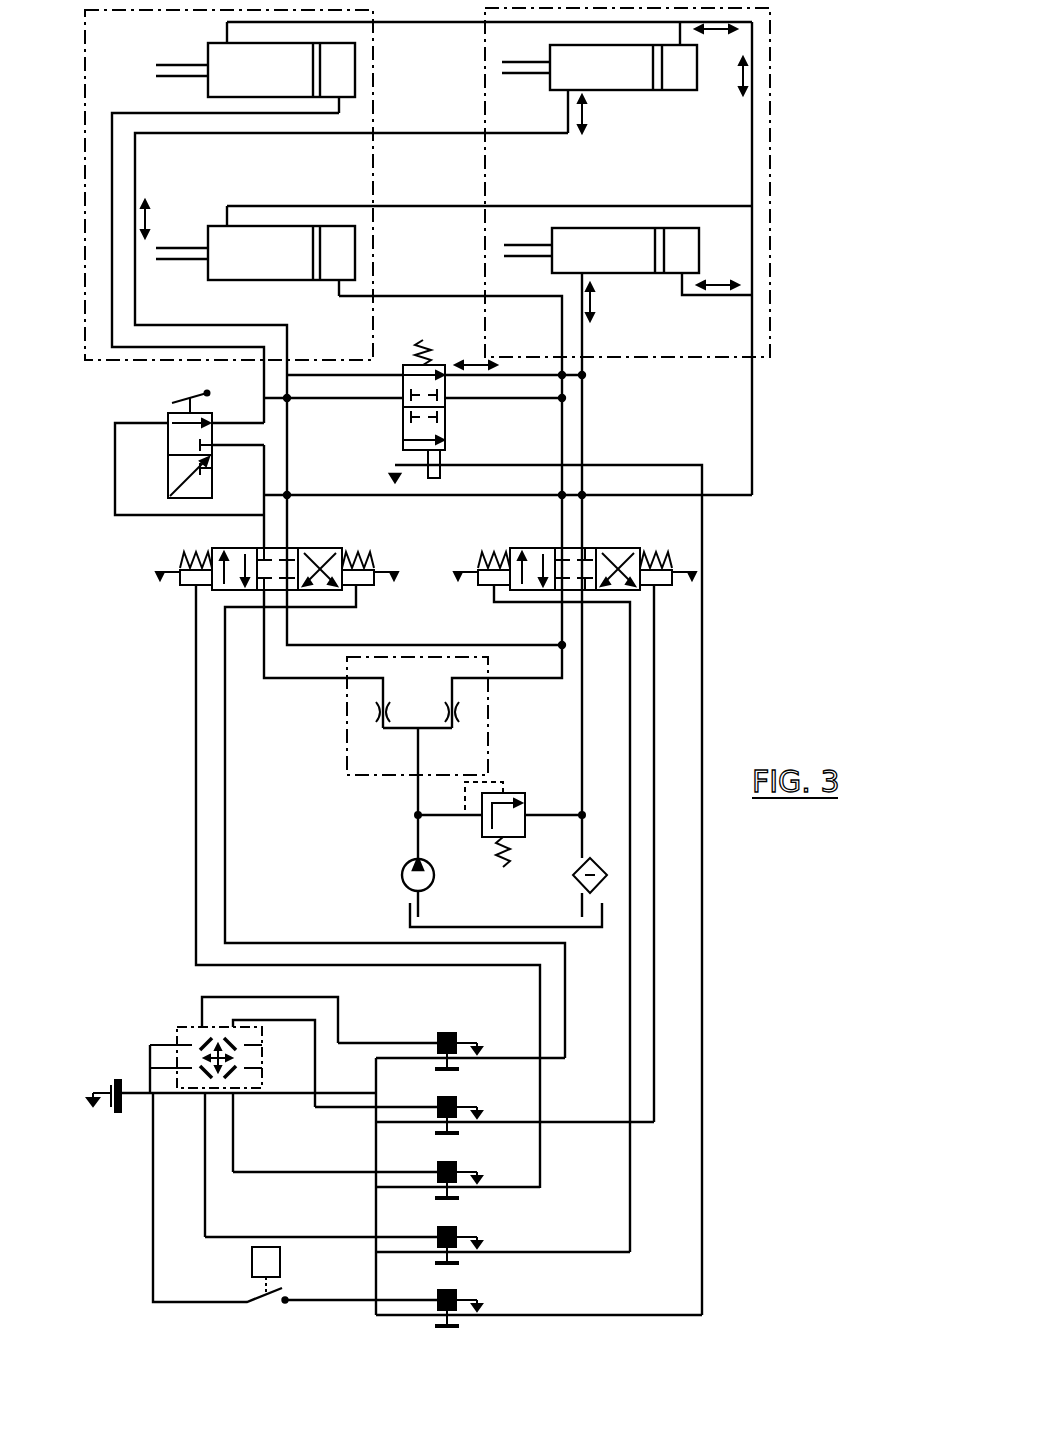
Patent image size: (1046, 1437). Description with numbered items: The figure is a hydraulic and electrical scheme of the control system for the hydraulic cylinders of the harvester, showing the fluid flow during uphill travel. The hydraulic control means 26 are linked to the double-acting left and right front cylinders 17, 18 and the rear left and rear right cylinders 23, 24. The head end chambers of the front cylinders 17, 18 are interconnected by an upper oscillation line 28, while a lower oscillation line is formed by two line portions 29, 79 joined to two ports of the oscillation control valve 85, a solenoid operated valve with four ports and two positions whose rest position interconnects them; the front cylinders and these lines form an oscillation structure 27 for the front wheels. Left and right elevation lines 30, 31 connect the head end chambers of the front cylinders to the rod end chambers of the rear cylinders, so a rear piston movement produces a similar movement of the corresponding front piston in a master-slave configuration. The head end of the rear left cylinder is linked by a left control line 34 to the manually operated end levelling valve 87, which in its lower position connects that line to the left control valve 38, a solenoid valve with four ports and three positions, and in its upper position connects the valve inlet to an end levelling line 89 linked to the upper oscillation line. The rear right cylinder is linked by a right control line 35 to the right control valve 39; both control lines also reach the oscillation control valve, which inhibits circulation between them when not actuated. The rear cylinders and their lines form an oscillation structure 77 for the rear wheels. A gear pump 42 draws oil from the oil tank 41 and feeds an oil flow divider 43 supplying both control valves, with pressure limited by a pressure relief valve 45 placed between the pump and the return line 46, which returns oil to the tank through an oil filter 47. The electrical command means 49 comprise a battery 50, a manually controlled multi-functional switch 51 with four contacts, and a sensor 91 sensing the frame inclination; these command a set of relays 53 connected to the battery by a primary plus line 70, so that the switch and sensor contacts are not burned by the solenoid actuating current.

The left front cylinder 17 is at (632, 92).
The right front cylinder 18 is at (622, 273).
The rear left cylinder 23 is at (357, 93).
The rear right cylinder 24 is at (357, 248).
The hydraulic control means 26 is at (724, 583).
The oscillation structure 27 is at (768, 163).
The upper oscillation line 28 is at (753, 76).
The lower oscillation line portion 29 is at (512, 137).
The left elevation line 30 is at (453, 28).
The right elevation line 31 is at (455, 208).
The left control line 34 is at (113, 280).
The right control line 35 is at (502, 300).
The left control valve 38 is at (233, 548).
The right control valve 39 is at (620, 546).
The oil tank 41 is at (408, 915).
The gear pump 42 is at (402, 875).
The oil flow divider 43 is at (347, 748).
The pressure relief valve 45 is at (482, 822).
The return line 46 is at (586, 735).
The oil filter 47 is at (572, 880).
The electrical command means 49 is at (722, 1070).
The battery 50 is at (113, 1115).
The multi-functional switch 51 is at (185, 1025).
The relays 53 is at (445, 1032).
The primary plus line 70 is at (167, 1093).
The oscillation structure 77 is at (85, 190).
The lower oscillation line portion 79 is at (582, 344).
The oscillation control valve 85 is at (445, 430).
The end levelling valve 87 is at (168, 418).
The end levelling line 89 is at (753, 408).
The sensor 91 is at (252, 1258).